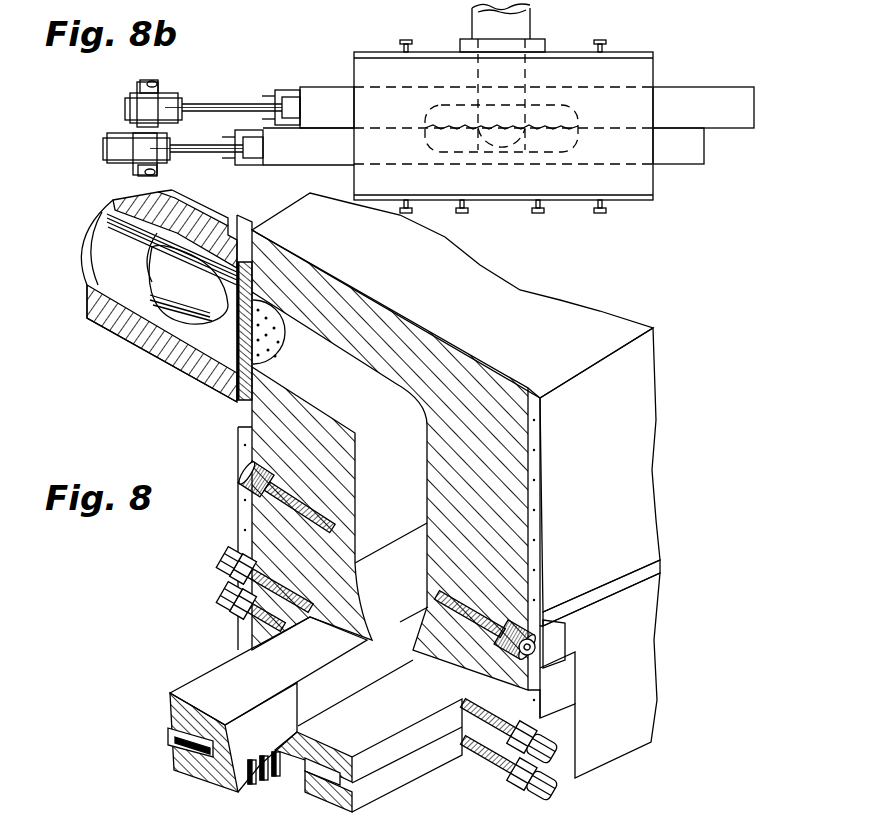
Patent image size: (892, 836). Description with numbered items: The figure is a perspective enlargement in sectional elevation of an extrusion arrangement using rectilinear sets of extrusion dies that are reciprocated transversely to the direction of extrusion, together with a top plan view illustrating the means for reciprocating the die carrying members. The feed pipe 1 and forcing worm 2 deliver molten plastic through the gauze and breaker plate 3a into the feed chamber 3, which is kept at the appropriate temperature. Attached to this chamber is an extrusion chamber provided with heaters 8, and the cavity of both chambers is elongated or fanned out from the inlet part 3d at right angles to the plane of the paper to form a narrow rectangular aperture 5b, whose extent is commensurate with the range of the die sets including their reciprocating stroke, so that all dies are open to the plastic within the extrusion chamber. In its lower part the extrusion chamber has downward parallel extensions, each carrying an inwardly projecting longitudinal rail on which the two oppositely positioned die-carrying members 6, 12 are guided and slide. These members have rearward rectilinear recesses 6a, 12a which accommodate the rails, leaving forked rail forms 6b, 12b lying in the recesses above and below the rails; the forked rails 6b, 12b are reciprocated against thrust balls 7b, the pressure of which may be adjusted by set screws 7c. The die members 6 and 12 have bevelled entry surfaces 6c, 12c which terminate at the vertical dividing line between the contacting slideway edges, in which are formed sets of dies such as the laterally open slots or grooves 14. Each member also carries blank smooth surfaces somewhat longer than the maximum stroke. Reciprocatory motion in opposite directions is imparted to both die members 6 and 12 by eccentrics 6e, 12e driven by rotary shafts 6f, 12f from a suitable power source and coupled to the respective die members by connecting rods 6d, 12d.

In FIG. 8B, the feed pipe 1 is at (531, 24).
In FIG. 8, the feed pipe 1 is at (203, 238).
In FIG. 8B, the forcing worm 2 is at (476, 69).
In FIG. 8, the forcing worm 2 is at (124, 259).
In FIG. 8B, the feed chamber 3 is at (393, 117).
In FIG. 8, the feed chamber 3 is at (470, 441).
In FIG. 8, the gauze and breaker plate 3a is at (222, 346).
In FIG. 8, the inlet part 3d is at (340, 386).
In FIG. 8, the narrow rectangular aperture 5b is at (372, 557).
In FIG. 8B, the die-carrying member 6 is at (338, 162).
In FIG. 8, the die-carrying member 6 is at (368, 744).
In FIG. 8, the rearward rectilinear recess 6a is at (320, 770).
In FIG. 8, the forked rail form 6b is at (340, 775).
In FIG. 8, the bevelled entry surface 6c is at (292, 731).
In FIG. 8B, the connecting rod 6d is at (218, 153).
In FIG. 8B, the eccentric 6e is at (112, 150).
In FIG. 8B, the rotary shaft 6f is at (140, 172).
In FIG. 8, the thrust balls 7b is at (522, 770).
In FIG. 8, the set screws 7c is at (246, 622).
In FIG. 8, the heaters 8 is at (610, 480).
In FIG. 8B, the die-carrying member 12 is at (319, 94).
In FIG. 8, the die-carrying member 12 is at (237, 707).
In FIG. 8, the rearward rectilinear recess 12a is at (200, 746).
In FIG. 8, the forked rail form 12b is at (172, 706).
In FIG. 8, the bevelled entry surface 12c is at (282, 747).
In FIG. 8B, the connecting rod 12d is at (228, 103).
In FIG. 8B, the eccentric 12e is at (160, 104).
In FIG. 8B, the rotary shaft 12f is at (139, 86).
In FIG. 8, the dies 14 is at (263, 782).